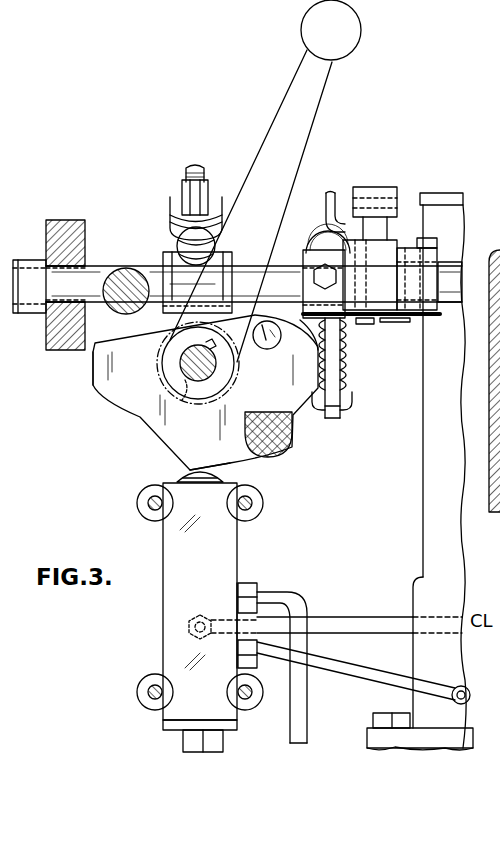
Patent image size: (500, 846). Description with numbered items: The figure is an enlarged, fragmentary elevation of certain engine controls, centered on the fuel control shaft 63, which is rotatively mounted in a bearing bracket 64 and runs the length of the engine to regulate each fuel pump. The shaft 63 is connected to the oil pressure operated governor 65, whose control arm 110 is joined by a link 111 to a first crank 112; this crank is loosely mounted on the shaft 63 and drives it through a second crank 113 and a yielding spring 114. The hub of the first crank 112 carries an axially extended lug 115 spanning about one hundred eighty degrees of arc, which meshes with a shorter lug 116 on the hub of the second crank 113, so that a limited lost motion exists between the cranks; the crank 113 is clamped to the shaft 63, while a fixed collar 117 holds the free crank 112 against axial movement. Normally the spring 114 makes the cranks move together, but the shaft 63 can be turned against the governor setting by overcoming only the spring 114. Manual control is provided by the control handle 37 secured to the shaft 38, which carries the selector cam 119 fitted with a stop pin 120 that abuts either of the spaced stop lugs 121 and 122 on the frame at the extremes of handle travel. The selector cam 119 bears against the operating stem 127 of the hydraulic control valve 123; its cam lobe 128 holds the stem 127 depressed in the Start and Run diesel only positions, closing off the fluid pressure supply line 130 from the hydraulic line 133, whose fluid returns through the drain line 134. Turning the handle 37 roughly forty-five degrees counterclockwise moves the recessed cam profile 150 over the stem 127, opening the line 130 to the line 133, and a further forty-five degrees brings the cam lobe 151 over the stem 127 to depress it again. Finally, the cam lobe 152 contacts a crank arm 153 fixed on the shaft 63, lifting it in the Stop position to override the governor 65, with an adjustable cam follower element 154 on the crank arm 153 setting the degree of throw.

The control handle 37 is at (320, 107).
The shaft 38 is at (172, 367).
The fuel control shaft 63 is at (97, 268).
The bearing bracket 64 is at (62, 230).
The governor 65 is at (442, 192).
The control arm 110 is at (408, 322).
The link 111 is at (372, 318).
The first crank 112 is at (390, 212).
The second crank 113 is at (350, 367).
The spring 114 is at (348, 345).
The lug 115 is at (328, 226).
The lug 116 is at (350, 281).
The collar 117 is at (438, 254).
The selector cam 119 is at (220, 412).
The stop pin 120 is at (266, 350).
The stop lug 121 is at (290, 436).
The stop lug 122 is at (133, 276).
The control valve 123 is at (165, 550).
The operating stem 127 is at (178, 474).
The cam lobe 128 is at (240, 464).
The fluid pressure supply line 130 is at (287, 592).
The hydraulic line 133 is at (345, 617).
The drain line 134 is at (362, 670).
The recessed cam profile 150 is at (142, 420).
The cam lobe 151 is at (93, 385).
The cam lobe 152 is at (312, 328).
The crank arm 153 is at (178, 210).
The cam follower element 154 is at (216, 246).